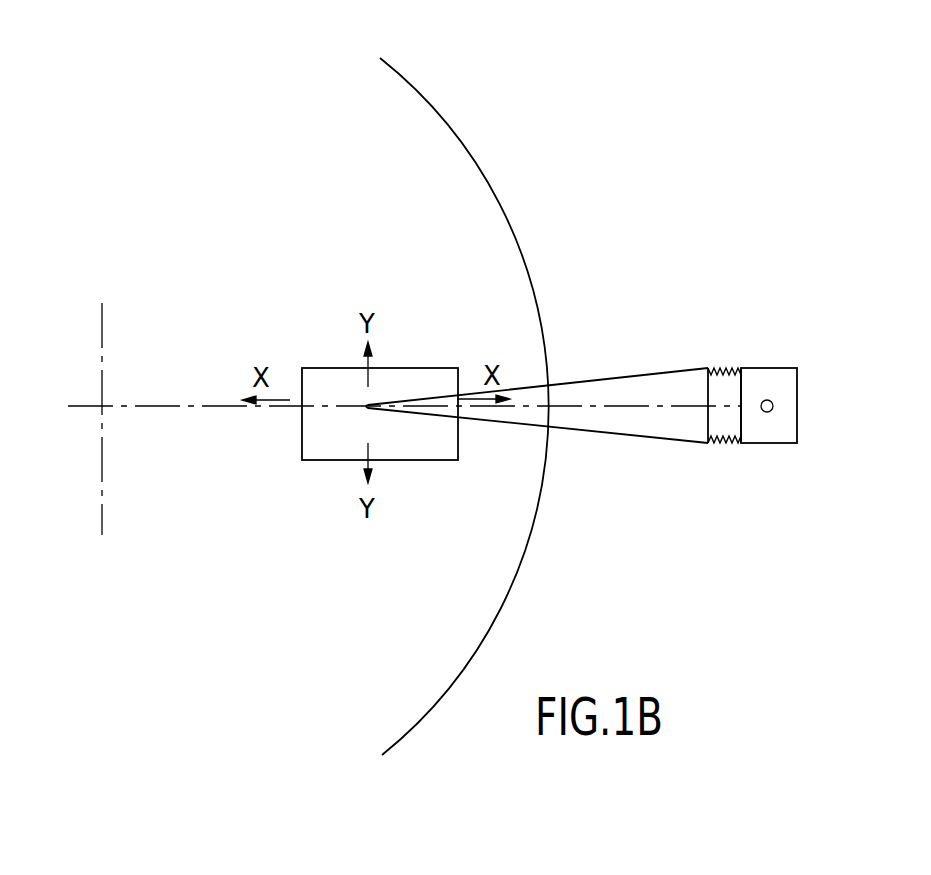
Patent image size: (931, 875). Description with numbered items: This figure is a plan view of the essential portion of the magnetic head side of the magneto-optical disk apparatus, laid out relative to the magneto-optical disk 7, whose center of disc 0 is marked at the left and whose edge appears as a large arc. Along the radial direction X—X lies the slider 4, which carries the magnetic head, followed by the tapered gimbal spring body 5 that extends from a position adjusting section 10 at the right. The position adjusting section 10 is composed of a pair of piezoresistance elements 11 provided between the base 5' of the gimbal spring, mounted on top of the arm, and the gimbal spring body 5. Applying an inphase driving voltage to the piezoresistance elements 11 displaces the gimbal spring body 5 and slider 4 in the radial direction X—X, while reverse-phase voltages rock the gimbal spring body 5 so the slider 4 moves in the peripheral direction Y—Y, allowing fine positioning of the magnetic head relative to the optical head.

The center of disc 0 is at (104, 406).
The slider 4 is at (328, 381).
The gimbal spring body 5 is at (537, 379).
The magneto-optical disk 7 is at (488, 185).
The position adjusting section 10 is at (753, 340).
The base of gimbal spring 5' is at (797, 404).
The piezoresistance element 11 is at (718, 445).